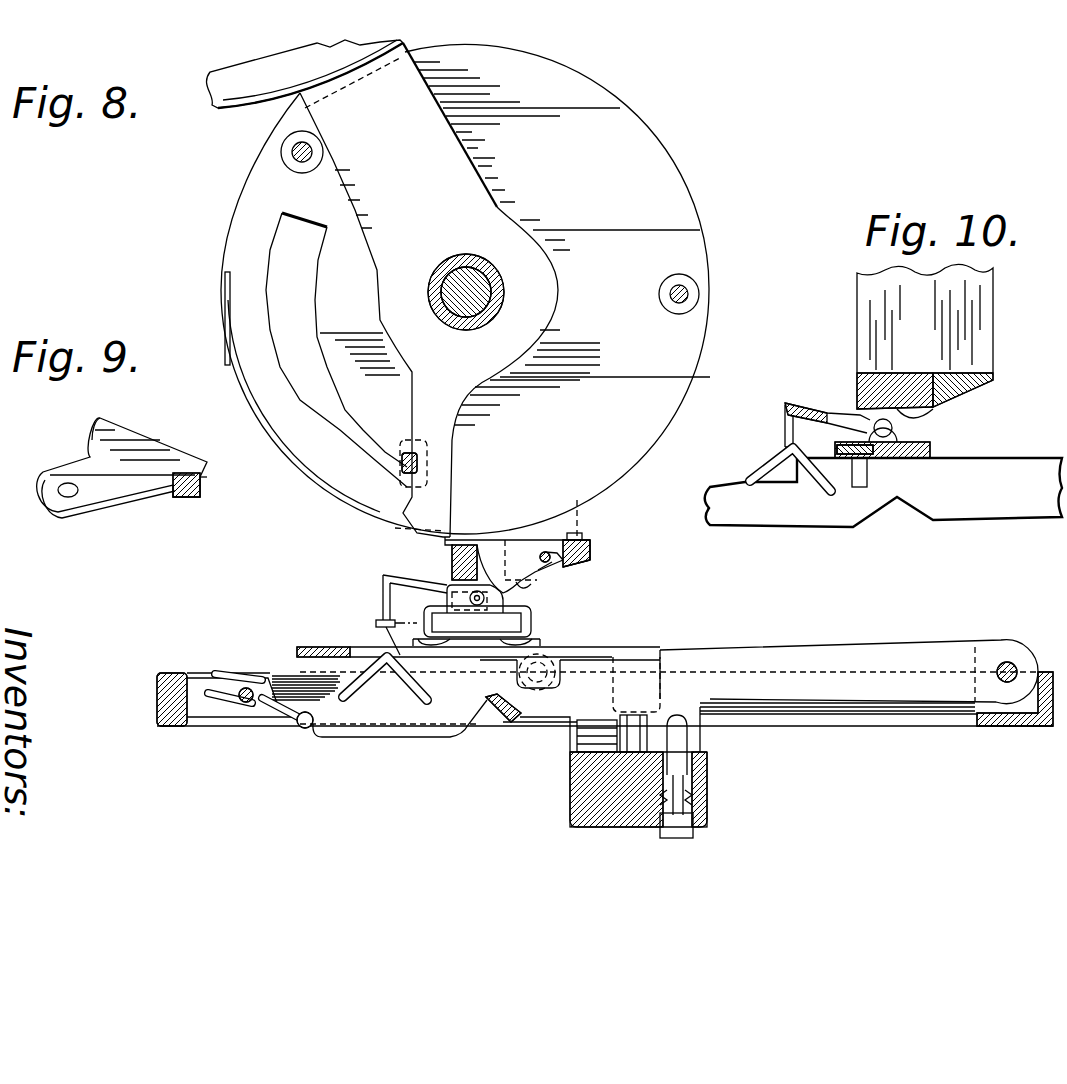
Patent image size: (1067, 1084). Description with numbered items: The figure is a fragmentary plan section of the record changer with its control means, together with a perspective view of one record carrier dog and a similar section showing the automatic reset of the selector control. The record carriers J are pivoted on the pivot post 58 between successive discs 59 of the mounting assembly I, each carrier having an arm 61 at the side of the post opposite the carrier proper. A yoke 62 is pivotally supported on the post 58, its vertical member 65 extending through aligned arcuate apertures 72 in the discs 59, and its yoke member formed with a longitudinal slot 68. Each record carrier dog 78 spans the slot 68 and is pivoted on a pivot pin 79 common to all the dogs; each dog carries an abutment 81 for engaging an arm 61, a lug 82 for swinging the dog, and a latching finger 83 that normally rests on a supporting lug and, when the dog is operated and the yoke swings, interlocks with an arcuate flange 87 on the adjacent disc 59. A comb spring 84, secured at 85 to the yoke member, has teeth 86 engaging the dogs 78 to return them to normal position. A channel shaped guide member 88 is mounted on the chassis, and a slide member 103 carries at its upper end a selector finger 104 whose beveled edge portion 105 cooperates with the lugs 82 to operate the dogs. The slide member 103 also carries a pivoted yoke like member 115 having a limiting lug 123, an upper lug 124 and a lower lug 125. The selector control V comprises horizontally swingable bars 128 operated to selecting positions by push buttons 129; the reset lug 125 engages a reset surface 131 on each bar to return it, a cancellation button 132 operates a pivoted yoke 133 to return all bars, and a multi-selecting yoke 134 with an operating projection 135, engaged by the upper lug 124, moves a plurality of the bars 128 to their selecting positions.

In FIG. 8, the mounting assembly I is at (657, 128).
In FIG. 8, the record carrier J is at (236, 111).
In FIG. 8, the pivot post 58 is at (454, 272).
In FIG. 8, the disc 59 is at (706, 243).
In FIG. 8, the record carrier arm 61 is at (452, 440).
In FIG. 8, the yoke 62 is at (592, 551).
In FIG. 10, the yoke 62 is at (993, 373).
In FIG. 8, the vertical member 65 is at (402, 460).
In FIG. 8, the longitudinal slot 68 is at (577, 566).
In FIG. 8, the arcuate aperture 72 is at (268, 235).
In FIG. 8, the record carrier dog 78 is at (513, 555).
In FIG. 9, the record carrier dog 78 is at (112, 505).
In FIG. 8, the pivot pin 79 is at (548, 564).
In FIG. 8, the abutment 81 is at (460, 533).
In FIG. 9, the abutment 81 is at (200, 452).
In FIG. 8, the lug 82 is at (522, 588).
In FIG. 9, the lug 82 is at (103, 420).
In FIG. 8, the latching finger 83 is at (482, 540).
In FIG. 9, the latching finger 83 is at (200, 490).
In FIG. 8, the comb spring 84 is at (590, 540).
In FIG. 8, the spring securing point 85 is at (580, 533).
In FIG. 8, the spring teeth 86 is at (548, 548).
In FIG. 8, the arcuate flange 87 is at (225, 315).
In FIG. 8, the guide member 88 is at (534, 620).
In FIG. 8, the slide member 103 is at (522, 634).
In FIG. 8, the selector finger 104 is at (453, 588).
In FIG. 8, the beveled edge portion 105 is at (472, 564).
In FIG. 8, the yoke like member 115 is at (392, 576).
In FIG. 10, the limiting lug 123 is at (897, 443).
In FIG. 8, the upper lug 124 is at (378, 593).
In FIG. 10, the lower lug 125 is at (786, 418).
In FIG. 8, the swingable bar 128 is at (880, 647).
In FIG. 8, the push button 129 is at (692, 835).
In FIG. 8, the reset surface 131 is at (386, 664).
In FIG. 10, the reset surface 131 is at (786, 452).
In FIG. 8, the cancellation button 132 is at (655, 710).
In FIG. 8, the pivoted yoke 133 is at (320, 648).
In FIG. 8, the multi-selecting yoke 134 is at (503, 725).
In FIG. 8, the operating projection 135 is at (377, 621).
In FIG. 8, the selector control V is at (708, 785).